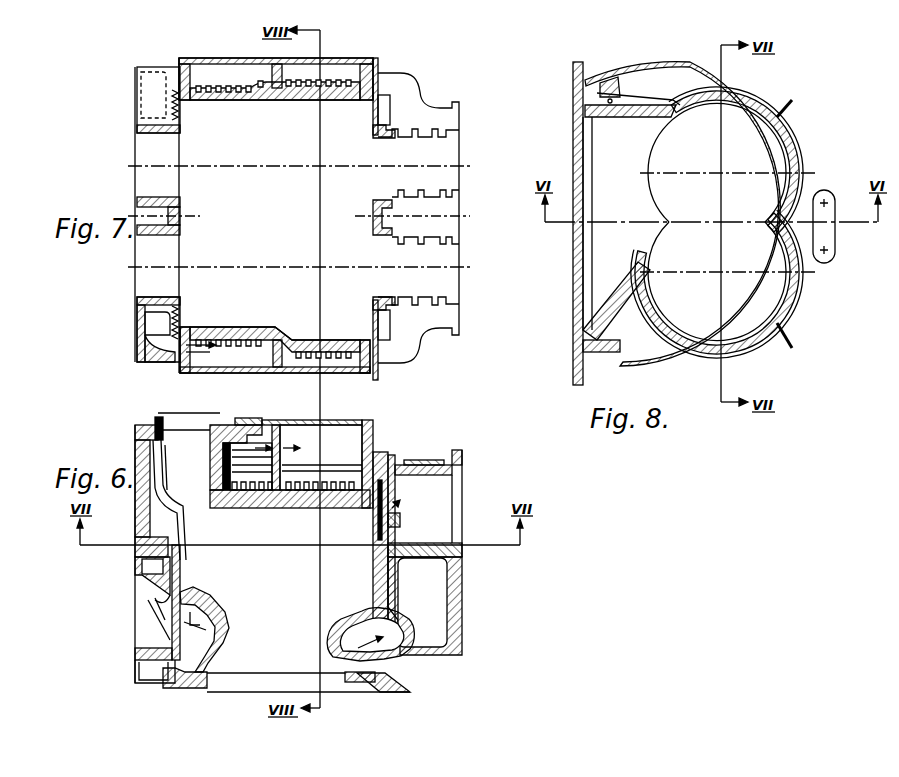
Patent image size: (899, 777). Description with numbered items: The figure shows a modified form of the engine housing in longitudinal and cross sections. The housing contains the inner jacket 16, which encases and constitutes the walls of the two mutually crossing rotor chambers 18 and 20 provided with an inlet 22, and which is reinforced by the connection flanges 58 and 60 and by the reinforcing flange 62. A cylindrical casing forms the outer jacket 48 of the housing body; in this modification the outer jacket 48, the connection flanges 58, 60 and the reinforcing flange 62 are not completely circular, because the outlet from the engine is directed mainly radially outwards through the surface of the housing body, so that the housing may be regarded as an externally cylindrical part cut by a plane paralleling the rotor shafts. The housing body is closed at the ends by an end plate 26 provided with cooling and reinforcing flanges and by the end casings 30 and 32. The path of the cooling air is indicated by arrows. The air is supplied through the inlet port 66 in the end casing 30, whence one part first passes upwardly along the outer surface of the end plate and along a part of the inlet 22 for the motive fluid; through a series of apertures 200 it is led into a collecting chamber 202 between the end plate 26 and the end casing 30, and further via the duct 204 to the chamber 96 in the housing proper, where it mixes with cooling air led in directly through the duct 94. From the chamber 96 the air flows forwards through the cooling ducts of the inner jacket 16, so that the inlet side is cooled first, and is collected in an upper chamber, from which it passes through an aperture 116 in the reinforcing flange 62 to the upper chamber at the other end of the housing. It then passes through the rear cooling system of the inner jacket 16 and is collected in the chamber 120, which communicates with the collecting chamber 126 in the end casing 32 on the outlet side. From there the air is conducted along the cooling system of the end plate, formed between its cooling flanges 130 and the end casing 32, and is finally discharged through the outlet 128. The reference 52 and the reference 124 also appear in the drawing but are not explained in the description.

In FIG. 6, the inner jacket 16 is at (341, 482).
In FIG. 8, the inner jacket 16 is at (667, 338).
In FIG. 8, the rotor chamber 18 is at (717, 162).
In FIG. 8, the rotor chamber 20 is at (717, 281).
In FIG. 6, the inlet 22 is at (187, 507).
In FIG. 6, the end plate 26 is at (170, 588).
In FIG. 6, the end casing 30 is at (138, 661).
In FIG. 6, the end casing 32 is at (396, 650).
In FIG. 6, the outer jacket 48 is at (330, 420).
In FIG. 6, the gear teeth 52 is at (317, 482).
In FIG. 6, the connection flange 58 is at (221, 424).
In FIG. 6, the connection flange 60 is at (368, 432).
In FIG. 6, the reinforcing flange 62 is at (277, 424).
In FIG. 6, the inlet port 66 is at (147, 625).
In FIG. 6, the duct 94 is at (201, 688).
In FIG. 6, the chamber 96 is at (176, 688).
In FIG. 6, the aperture 116 is at (274, 442).
In FIG. 6, the chamber 120 is at (353, 658).
In FIG. 6, the bottom plate 124 is at (380, 692).
In FIG. 6, the collecting chamber 126 is at (394, 643).
In FIG. 6, the outlet 128 is at (447, 514).
In FIG. 6, the cooling flanges 130 is at (390, 513).
In FIG. 6, the apertures 200 is at (150, 441).
In FIG. 7, the collecting chamber 202 is at (146, 325).
In FIG. 6, the collecting chamber 202 is at (150, 531).
In FIG. 7, the duct 204 is at (148, 354).